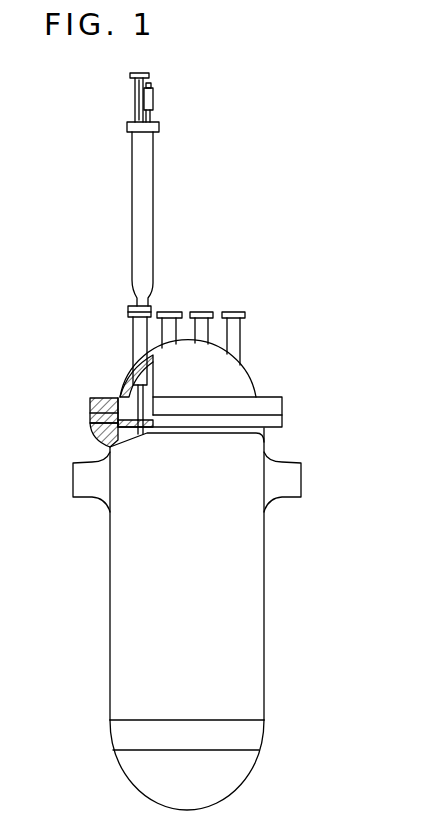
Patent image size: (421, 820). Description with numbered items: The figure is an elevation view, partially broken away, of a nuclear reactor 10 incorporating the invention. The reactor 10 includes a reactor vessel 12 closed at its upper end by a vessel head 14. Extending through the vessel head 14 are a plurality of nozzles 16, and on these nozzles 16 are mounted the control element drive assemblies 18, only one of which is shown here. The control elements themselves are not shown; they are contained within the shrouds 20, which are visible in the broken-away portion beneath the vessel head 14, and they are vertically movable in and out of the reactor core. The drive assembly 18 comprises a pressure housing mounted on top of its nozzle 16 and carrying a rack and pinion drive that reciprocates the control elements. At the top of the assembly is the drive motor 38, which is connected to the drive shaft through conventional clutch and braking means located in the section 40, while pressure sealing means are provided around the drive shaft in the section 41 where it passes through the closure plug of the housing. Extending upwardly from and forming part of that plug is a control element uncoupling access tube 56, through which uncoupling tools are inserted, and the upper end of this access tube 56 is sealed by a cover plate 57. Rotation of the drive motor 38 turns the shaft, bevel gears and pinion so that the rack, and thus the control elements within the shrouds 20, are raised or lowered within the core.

The nuclear reactor 10 is at (276, 567).
The reactor vessel 12 is at (190, 633).
The vessel head 14 is at (230, 380).
The nozzles 16 is at (140, 333).
The control element drive assembly 18 is at (147, 210).
The shrouds 20 is at (139, 434).
The drive motor 38 is at (152, 84).
The clutch and braking section 40 is at (153, 99).
The pressure sealing section 41 is at (152, 115).
The control element uncoupling access tube 56 is at (136, 103).
The cover plate 57 is at (140, 73).